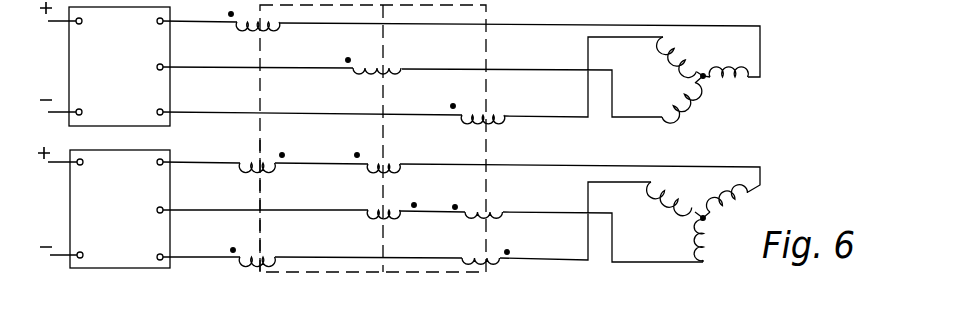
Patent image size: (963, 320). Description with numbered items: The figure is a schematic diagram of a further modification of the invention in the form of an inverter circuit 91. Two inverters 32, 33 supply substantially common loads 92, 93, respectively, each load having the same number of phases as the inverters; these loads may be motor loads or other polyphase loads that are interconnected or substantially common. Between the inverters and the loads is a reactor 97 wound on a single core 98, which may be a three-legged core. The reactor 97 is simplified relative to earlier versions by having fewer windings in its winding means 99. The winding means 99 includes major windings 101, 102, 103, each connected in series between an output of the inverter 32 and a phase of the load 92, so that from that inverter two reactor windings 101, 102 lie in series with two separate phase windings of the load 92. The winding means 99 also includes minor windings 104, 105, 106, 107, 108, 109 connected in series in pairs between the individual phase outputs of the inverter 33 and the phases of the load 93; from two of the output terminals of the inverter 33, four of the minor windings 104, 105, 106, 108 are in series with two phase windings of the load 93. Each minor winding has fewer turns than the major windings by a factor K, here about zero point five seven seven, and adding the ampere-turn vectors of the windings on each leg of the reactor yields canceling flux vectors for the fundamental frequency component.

The inverter 32 is at (69, 63).
The inverter 33 is at (68, 206).
The inverter circuit 91 is at (735, 81).
The load 92 is at (742, 63).
The load 93 is at (742, 250).
The reactor 97 is at (331, 283).
The core 98 is at (366, 274).
The winding means 99 is at (372, 216).
The major winding 101 is at (270, 31).
The major winding 102 is at (393, 76).
The major winding 103 is at (489, 108).
The minor winding 104 is at (258, 157).
The minor winding 105 is at (258, 252).
The minor winding 106 is at (393, 204).
The minor winding 107 is at (393, 157).
The minor winding 108 is at (490, 206).
The minor winding 109 is at (492, 254).